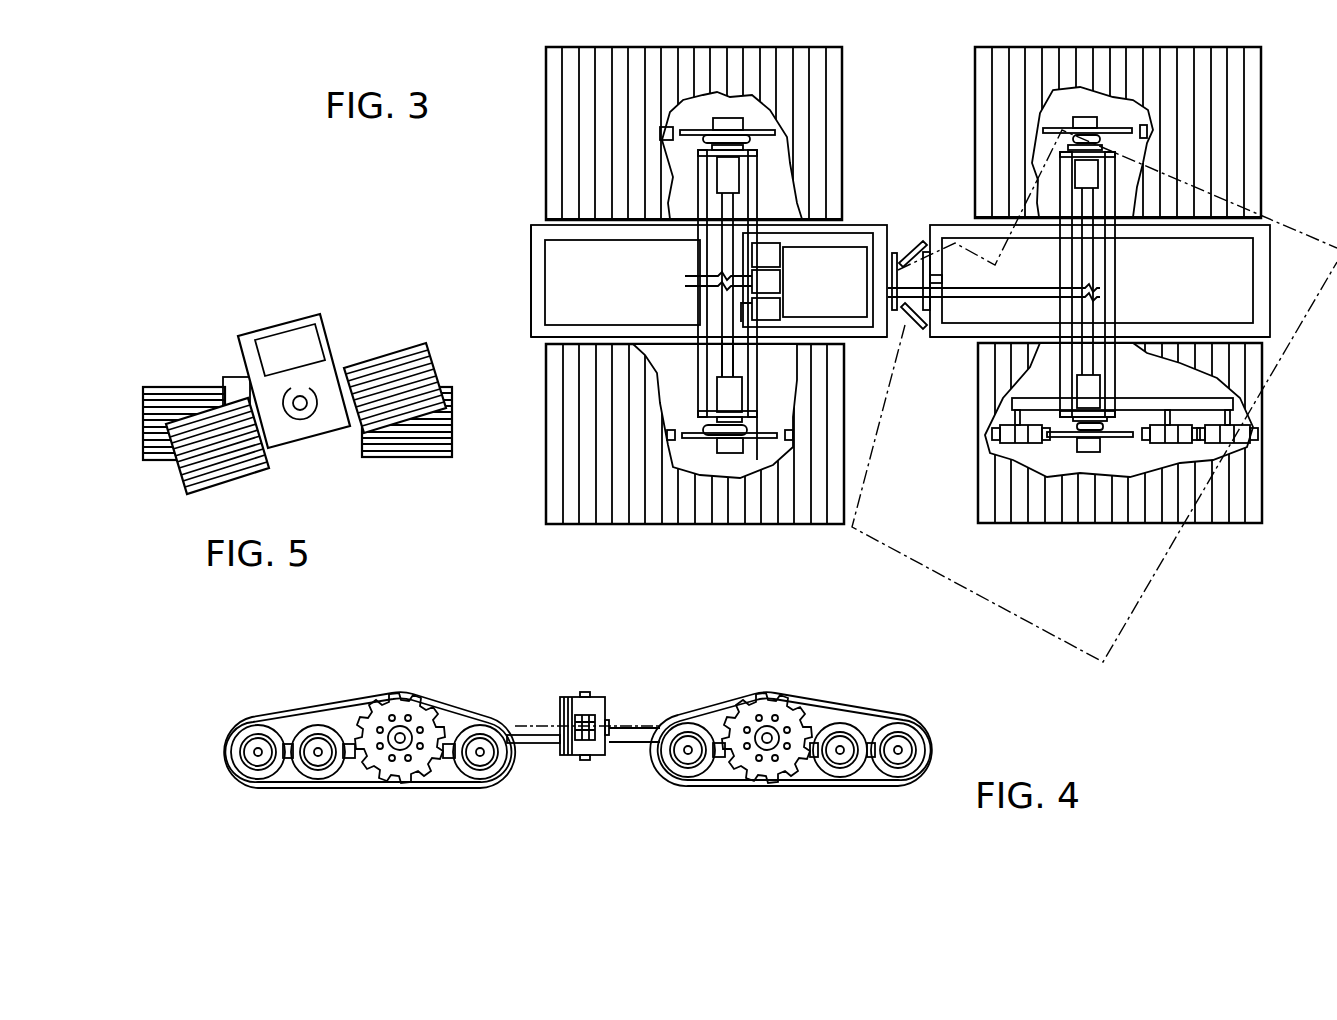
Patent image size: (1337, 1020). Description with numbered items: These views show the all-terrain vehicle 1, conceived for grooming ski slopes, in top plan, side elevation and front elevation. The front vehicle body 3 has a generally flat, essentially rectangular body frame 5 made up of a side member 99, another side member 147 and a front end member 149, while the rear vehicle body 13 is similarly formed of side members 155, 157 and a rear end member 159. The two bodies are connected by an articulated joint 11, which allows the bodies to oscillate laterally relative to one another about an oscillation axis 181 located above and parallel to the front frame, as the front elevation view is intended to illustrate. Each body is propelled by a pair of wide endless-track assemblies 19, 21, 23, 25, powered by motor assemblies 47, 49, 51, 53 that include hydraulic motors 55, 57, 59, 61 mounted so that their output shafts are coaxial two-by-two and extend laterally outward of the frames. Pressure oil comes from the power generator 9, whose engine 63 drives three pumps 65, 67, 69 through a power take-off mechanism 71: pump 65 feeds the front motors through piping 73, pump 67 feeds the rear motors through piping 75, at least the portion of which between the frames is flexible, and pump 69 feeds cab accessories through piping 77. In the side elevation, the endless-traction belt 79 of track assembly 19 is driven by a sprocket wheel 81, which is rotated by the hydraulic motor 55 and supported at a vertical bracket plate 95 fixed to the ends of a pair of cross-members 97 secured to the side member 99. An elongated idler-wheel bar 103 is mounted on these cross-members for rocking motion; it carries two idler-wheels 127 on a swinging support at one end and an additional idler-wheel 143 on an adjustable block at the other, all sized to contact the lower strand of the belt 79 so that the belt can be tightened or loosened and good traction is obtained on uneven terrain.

In FIG. 3, the all-terrain vehicle 1 is at (1278, 250).
In FIG. 5, the front vehicle body 3 is at (296, 325).
In FIG. 3, the body frame 5 is at (524, 310).
In FIG. 4, the body frame 5 is at (520, 737).
In FIG. 3, the power generator 9 is at (848, 248).
In FIG. 3, the articulated joint 11 is at (897, 250).
In FIG. 4, the articulated joint 11 is at (608, 696).
In FIG. 4, the rear vehicle body 13 is at (640, 742).
In FIG. 3, the endless-track assembly 19 is at (590, 505).
In FIG. 4, the endless-track assembly 19 is at (315, 712).
In FIG. 5, the endless-track assembly 19 is at (370, 368).
In FIG. 3, the endless-track assembly 21 is at (563, 72).
In FIG. 5, the endless-track assembly 21 is at (243, 465).
In FIG. 3, the endless-track assembly 23 is at (1215, 515).
In FIG. 4, the endless-track assembly 23 is at (865, 705).
In FIG. 5, the endless-track assembly 23 is at (404, 458).
In FIG. 3, the endless-track assembly 25 is at (1250, 85).
In FIG. 5, the endless-track assembly 25 is at (170, 395).
In FIG. 3, the motor assembly 47 is at (718, 456).
In FIG. 3, the motor assembly 49 is at (738, 120).
In FIG. 3, the motor assembly 51 is at (1078, 456).
In FIG. 3, the motor assembly 53 is at (1088, 120).
In FIG. 3, the hydraulic motor 55 is at (742, 390).
In FIG. 3, the hydraulic motor 57 is at (740, 178).
In FIG. 3, the hydraulic motor 59 is at (1097, 395).
In FIG. 3, the hydraulic motor 61 is at (1097, 178).
In FIG. 3, the engine 63 is at (845, 318).
In FIG. 3, the pump 65 is at (780, 265).
In FIG. 3, the pump 67 is at (780, 302).
In FIG. 3, the pump 69 is at (780, 281).
In FIG. 3, the power take-off mechanism 71 is at (760, 250).
In FIG. 3, the piping 73 is at (730, 216).
In FIG. 3, the piping 75 is at (1000, 292).
In FIG. 3, the piping 77 is at (688, 286).
In FIG. 4, the endless-traction belt 79 is at (462, 783).
In FIG. 3, the sprocket wheel 81 is at (767, 455).
In FIG. 4, the sprocket wheel 81 is at (402, 778).
In FIG. 3, the vertical bracket plate 95 is at (758, 414).
In FIG. 3, the cross-members 97 is at (735, 360).
In FIG. 3, the side member 99 is at (560, 330).
In FIG. 4, the idler-wheel bar 103 is at (290, 760).
In FIG. 4, the idler-wheels 127 is at (245, 762).
In FIG. 4, the idler-wheel 143 is at (495, 762).
In FIG. 3, the side member 147 is at (565, 240).
In FIG. 3, the front end member 149 is at (532, 262).
In FIG. 3, the side member 155 is at (1130, 325).
In FIG. 3, the side member 157 is at (1150, 240).
In FIG. 3, the rear end member 159 is at (1270, 318).
In FIG. 4, the oscillation axis 181 is at (630, 726).